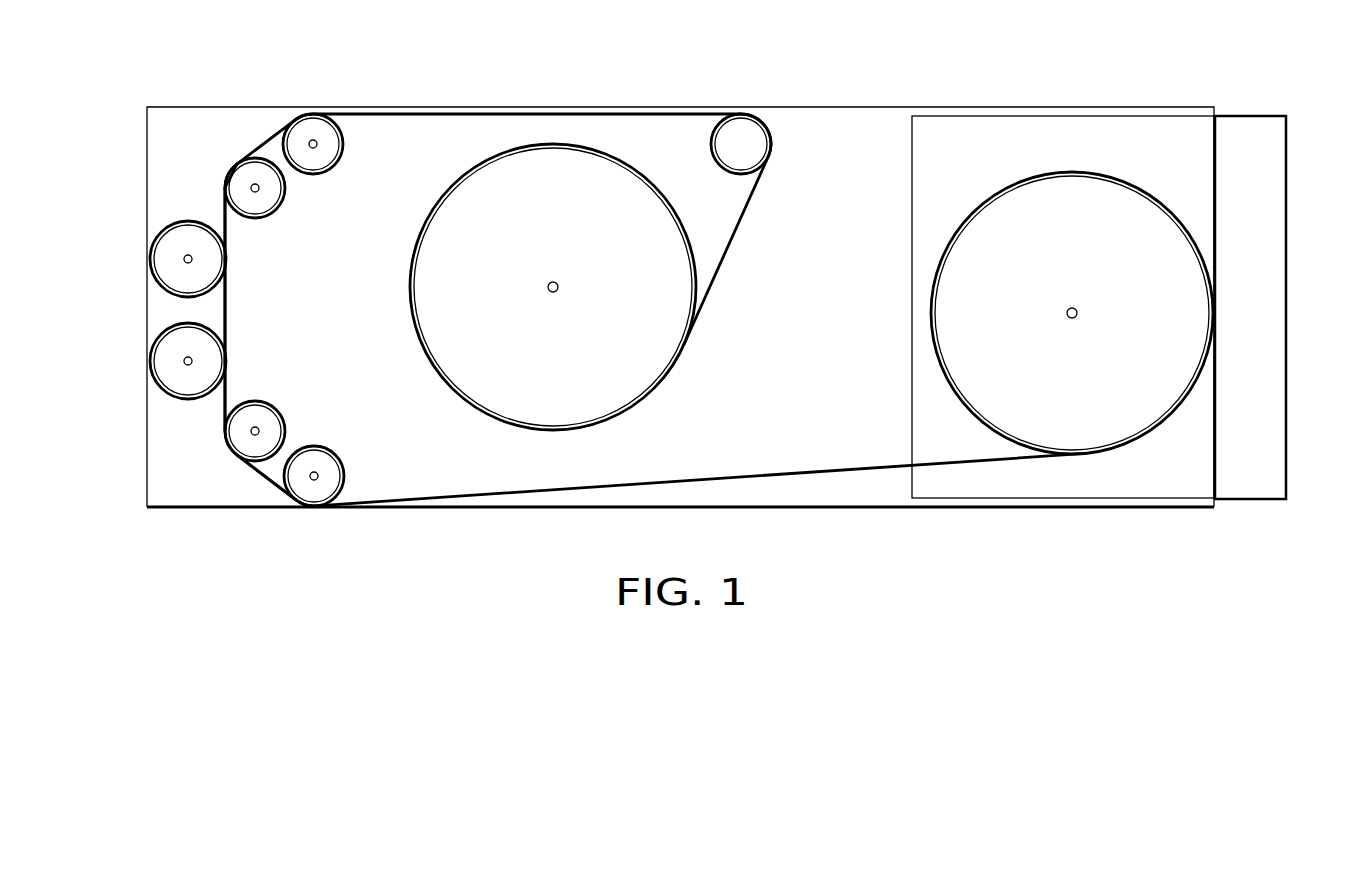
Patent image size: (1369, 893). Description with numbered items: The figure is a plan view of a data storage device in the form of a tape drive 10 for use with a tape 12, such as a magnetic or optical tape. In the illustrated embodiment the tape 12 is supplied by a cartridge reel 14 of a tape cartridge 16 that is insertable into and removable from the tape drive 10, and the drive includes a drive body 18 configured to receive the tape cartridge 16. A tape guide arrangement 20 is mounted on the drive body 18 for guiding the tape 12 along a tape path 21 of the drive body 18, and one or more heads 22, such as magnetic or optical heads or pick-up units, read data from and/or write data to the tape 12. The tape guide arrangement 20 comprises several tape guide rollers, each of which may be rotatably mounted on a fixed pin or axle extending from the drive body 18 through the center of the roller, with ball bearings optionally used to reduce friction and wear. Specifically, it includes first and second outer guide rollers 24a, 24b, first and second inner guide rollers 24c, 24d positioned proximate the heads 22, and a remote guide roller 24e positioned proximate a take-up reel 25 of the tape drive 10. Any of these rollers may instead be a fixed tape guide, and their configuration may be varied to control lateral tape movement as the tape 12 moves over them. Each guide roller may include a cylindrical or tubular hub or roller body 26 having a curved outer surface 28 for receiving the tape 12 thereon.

The tape drive 10 is at (916, 66).
The tape 12 is at (658, 480).
The cartridge reel 14 is at (1185, 197).
The tape cartridge 16 is at (1287, 150).
The drive body 18 is at (829, 107).
The tape guide arrangement 20 is at (238, 152).
The tape path 21 is at (247, 475).
The heads 22 is at (147, 257).
The first outer guide roller 24a is at (343, 144).
The second outer guide roller 24b is at (315, 507).
The first inner guide roller 24c is at (285, 188).
The second inner guide roller 24d is at (231, 452).
The remote guide roller 24e is at (700, 142).
The take-up reel 25 is at (564, 143).
The roller body 26 is at (352, 108).
The curved outer surface 28 is at (313, 116).